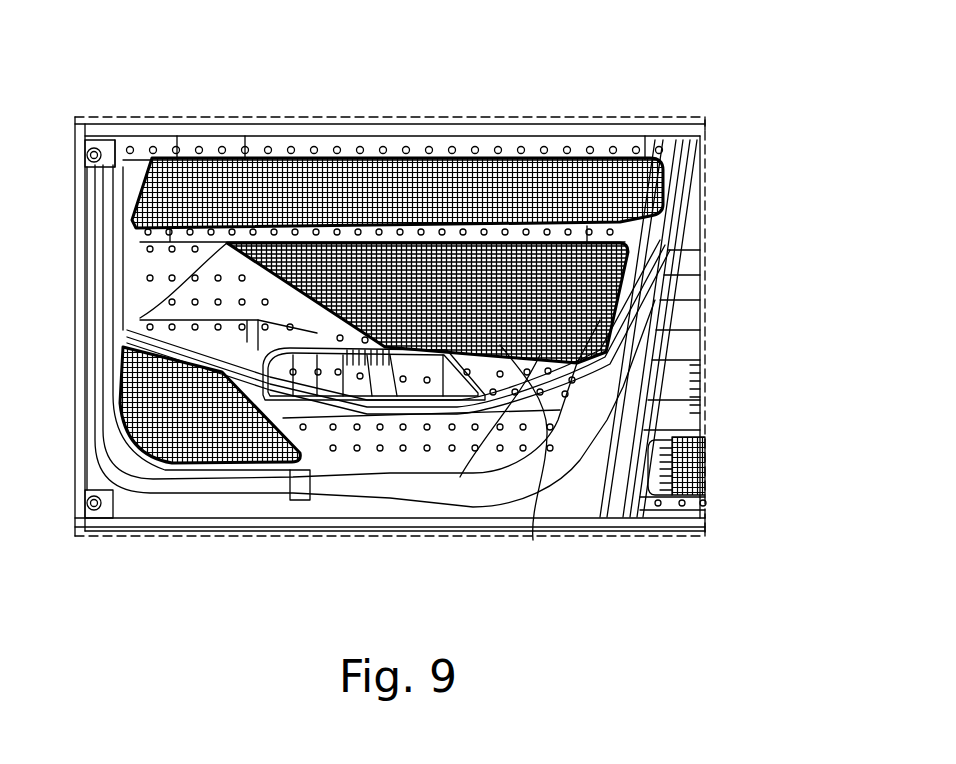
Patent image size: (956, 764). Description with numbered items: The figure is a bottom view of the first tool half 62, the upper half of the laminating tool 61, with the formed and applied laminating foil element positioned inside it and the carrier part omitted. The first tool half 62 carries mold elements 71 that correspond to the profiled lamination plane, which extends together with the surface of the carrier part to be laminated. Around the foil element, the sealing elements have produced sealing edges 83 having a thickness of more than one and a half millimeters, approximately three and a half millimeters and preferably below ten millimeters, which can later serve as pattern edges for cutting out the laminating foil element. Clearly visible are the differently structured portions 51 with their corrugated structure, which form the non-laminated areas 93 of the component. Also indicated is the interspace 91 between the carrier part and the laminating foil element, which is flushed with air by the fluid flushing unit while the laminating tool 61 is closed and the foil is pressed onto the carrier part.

The differently structured portions 51 is at (258, 132).
The laminating tool 61 is at (730, 68).
The first tool half 62 is at (421, 542).
The mold elements 71 is at (612, 120).
The sealing edges 83 is at (440, 108).
The interspace 91 is at (533, 540).
The non-laminated areas 93 is at (625, 233).